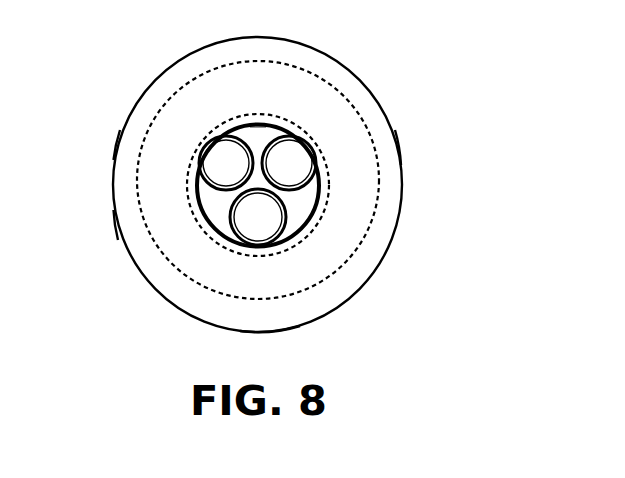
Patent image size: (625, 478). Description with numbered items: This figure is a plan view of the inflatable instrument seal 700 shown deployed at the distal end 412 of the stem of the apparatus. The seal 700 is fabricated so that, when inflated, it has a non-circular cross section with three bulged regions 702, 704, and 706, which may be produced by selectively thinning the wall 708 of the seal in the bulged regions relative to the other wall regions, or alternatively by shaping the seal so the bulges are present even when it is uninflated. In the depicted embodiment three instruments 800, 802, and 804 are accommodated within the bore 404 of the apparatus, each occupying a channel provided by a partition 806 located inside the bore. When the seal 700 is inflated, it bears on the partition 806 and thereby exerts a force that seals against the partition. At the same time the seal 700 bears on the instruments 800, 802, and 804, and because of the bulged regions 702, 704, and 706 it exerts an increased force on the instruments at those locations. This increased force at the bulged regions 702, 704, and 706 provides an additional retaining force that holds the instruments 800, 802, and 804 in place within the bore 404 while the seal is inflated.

The seal 700 is at (212, 46).
The bulged region 702 is at (122, 100).
The bulged region 704 is at (405, 103).
The bulged region 706 is at (280, 352).
The wall 708 is at (128, 231).
The distal end 412 is at (190, 282).
The bore 404 is at (320, 192).
The instrument 800 is at (228, 165).
The instrument 802 is at (290, 162).
The instrument 804 is at (258, 215).
The partition 806 is at (258, 137).